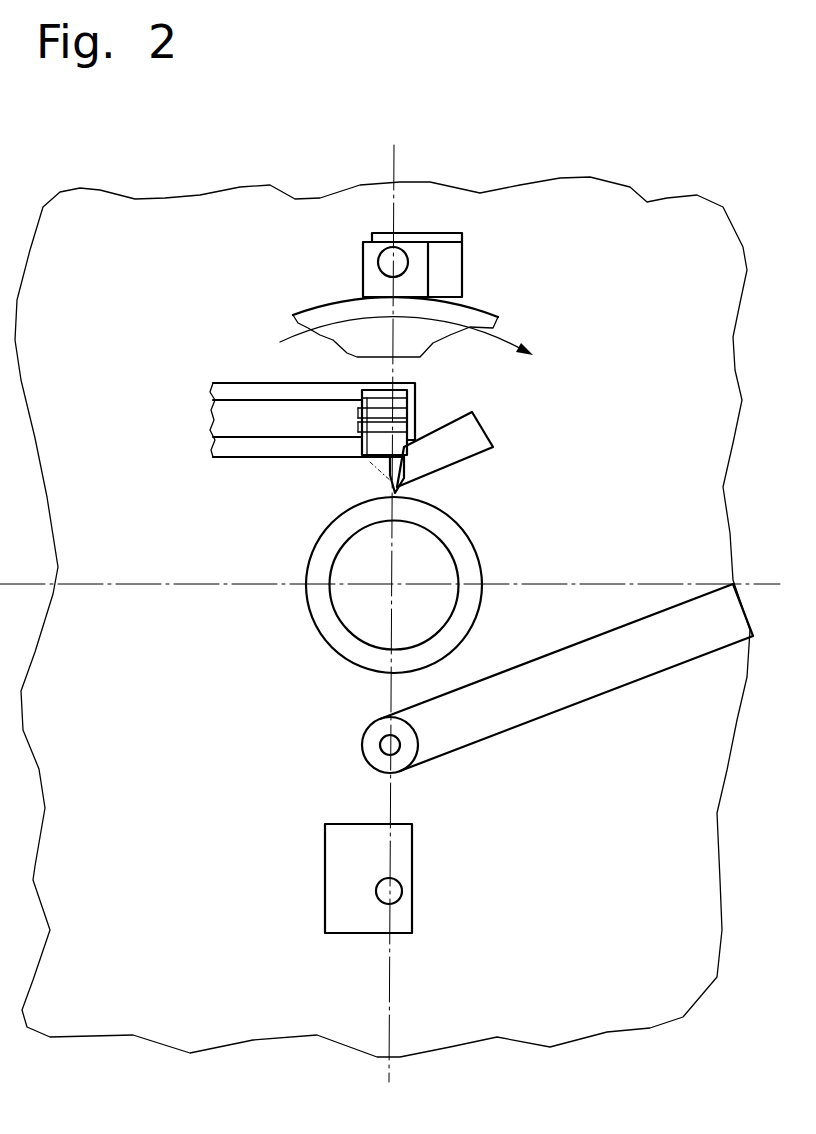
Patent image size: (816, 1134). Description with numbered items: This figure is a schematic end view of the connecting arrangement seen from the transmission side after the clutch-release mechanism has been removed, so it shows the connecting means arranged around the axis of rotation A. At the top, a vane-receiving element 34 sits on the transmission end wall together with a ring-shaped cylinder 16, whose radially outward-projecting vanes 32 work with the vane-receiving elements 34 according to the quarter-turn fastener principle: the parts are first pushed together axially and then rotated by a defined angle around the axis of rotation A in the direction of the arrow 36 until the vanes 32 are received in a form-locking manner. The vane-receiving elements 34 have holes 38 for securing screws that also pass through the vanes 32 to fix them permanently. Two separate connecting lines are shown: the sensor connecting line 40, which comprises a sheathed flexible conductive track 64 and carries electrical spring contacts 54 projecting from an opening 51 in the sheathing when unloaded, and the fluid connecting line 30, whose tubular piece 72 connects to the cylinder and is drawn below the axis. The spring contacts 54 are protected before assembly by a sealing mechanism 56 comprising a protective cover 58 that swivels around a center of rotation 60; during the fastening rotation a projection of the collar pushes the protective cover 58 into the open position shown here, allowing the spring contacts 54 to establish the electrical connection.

The ring-shaped cylinder 16 is at (478, 315).
The fluid connecting line 30 is at (555, 685).
The vanes 32 is at (370, 257).
The vane-receiving elements 34 is at (452, 267).
The arrow 36 is at (513, 344).
The holes 38 is at (400, 897).
The sensor connecting line 40 is at (228, 387).
The opening 51 is at (383, 447).
The electrical spring contacts 54 is at (413, 402).
The sealing mechanism 56 is at (498, 428).
The protective cover 58 is at (450, 455).
The center of rotation 60 is at (410, 493).
The flexible conductive track 64 is at (223, 414).
The tubular piece 72 is at (392, 760).
The axis of rotation A is at (394, 580).